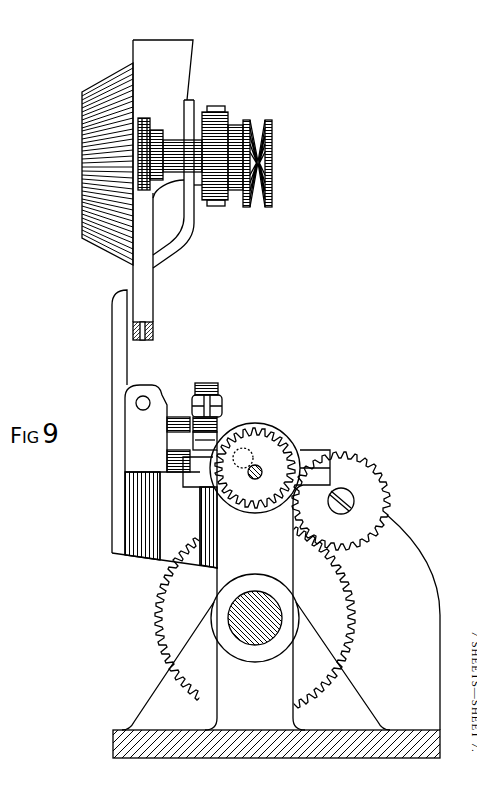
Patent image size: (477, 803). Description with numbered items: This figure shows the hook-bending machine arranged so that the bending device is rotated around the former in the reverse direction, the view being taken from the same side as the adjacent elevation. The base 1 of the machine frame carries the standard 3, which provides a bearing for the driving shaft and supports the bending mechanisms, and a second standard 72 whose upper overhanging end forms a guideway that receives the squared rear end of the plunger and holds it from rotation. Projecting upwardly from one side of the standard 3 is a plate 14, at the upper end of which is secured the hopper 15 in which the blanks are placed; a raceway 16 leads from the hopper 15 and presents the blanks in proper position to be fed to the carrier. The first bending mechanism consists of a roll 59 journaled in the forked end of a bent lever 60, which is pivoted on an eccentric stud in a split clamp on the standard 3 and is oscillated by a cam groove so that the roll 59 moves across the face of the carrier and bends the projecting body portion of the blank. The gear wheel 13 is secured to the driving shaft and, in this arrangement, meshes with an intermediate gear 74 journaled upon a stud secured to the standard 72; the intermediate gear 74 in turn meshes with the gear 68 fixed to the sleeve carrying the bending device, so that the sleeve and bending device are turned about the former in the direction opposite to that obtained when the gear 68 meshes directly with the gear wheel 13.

The base 1 is at (440, 738).
The standard 3 is at (294, 663).
The gear wheel 13 is at (353, 600).
The plate 14 is at (112, 363).
The hopper 15 is at (82, 94).
The raceway 16 is at (153, 333).
The roll 59 is at (222, 405).
The bent lever 60 is at (198, 387).
The gear 68 is at (270, 440).
The standard 72 is at (439, 605).
The intermediate gear 74 is at (362, 474).